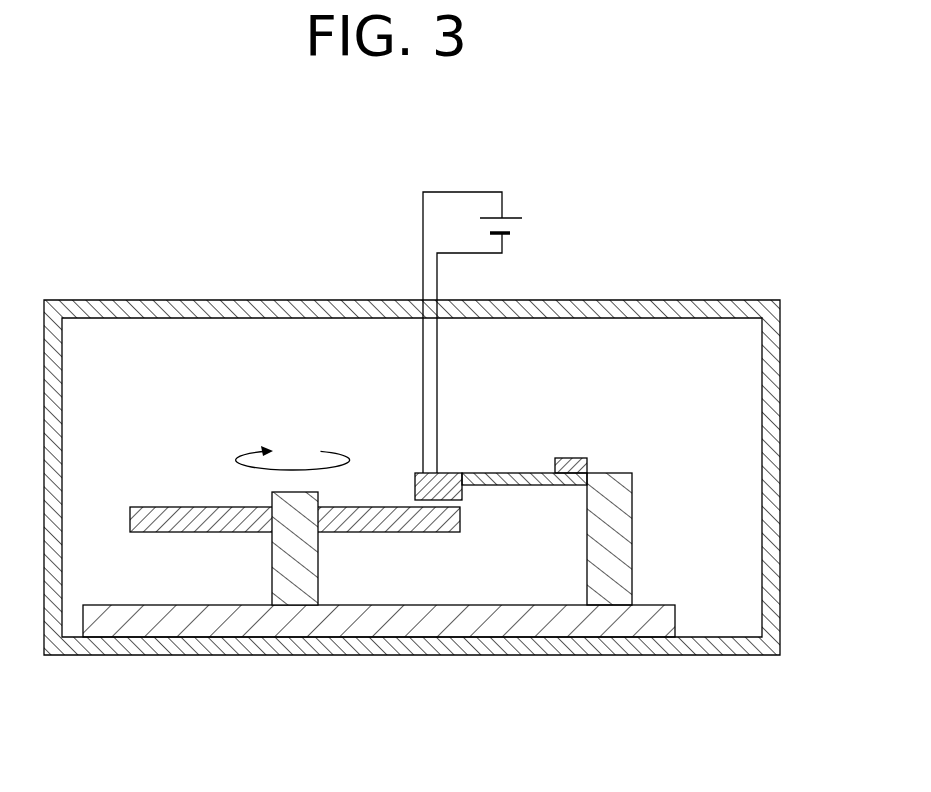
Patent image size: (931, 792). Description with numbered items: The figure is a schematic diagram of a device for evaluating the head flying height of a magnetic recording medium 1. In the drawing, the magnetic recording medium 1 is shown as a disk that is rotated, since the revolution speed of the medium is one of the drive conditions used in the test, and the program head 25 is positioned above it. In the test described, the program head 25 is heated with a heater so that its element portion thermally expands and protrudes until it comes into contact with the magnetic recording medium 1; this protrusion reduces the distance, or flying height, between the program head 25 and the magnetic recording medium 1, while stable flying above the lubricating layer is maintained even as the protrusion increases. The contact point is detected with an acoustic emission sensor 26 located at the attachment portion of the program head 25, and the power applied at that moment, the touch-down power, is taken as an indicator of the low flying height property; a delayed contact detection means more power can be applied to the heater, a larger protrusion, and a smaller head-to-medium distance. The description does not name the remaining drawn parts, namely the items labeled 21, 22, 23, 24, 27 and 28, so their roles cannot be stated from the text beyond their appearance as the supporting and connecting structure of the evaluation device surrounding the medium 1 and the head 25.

The magnetic recording medium 1 is at (170, 507).
The base 21 is at (195, 639).
The rotating shaft 22 is at (298, 606).
The support column 23 is at (618, 478).
The electrode plate 24 is at (520, 473).
The program head 25 is at (460, 482).
The acoustic emission (AE) sensor 26 is at (573, 458).
The power supply 27 is at (533, 211).
The chamber 28 is at (107, 656).